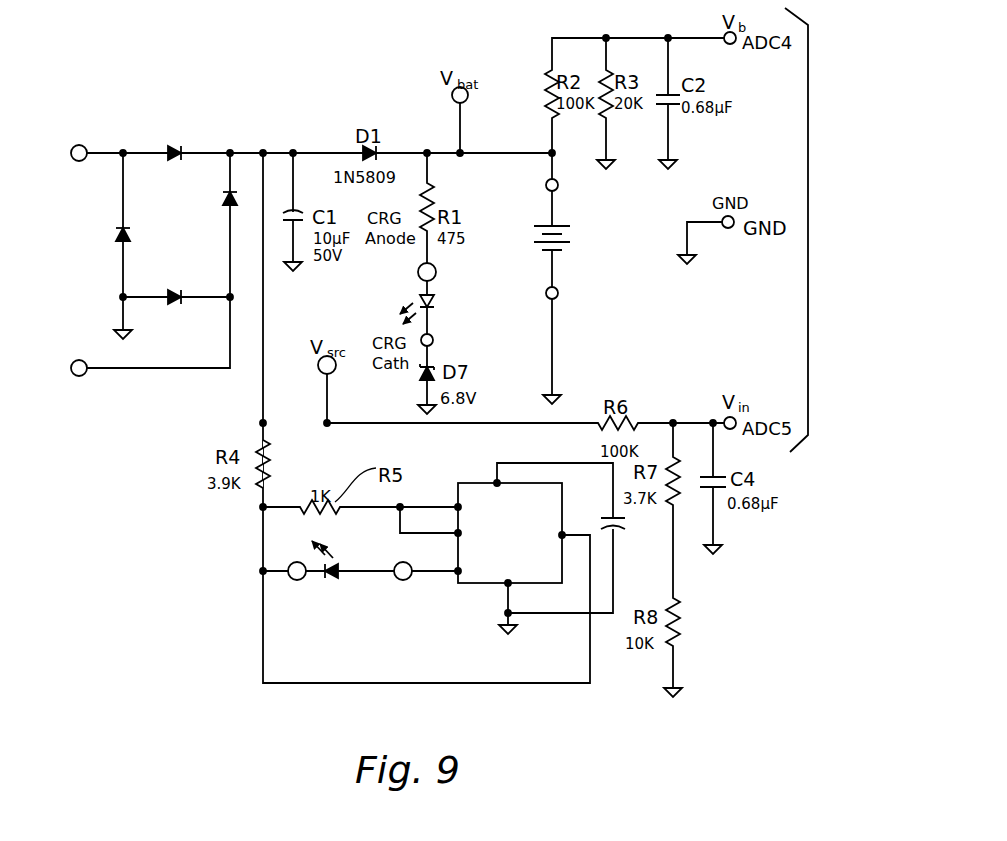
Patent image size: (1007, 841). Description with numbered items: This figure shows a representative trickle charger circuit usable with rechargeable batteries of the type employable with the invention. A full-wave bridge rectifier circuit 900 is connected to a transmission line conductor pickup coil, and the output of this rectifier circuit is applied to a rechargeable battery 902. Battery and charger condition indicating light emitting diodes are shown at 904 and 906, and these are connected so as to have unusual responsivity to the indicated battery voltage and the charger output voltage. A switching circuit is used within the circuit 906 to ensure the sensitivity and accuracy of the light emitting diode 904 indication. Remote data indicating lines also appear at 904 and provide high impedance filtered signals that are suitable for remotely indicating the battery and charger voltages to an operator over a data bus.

The full-wave bridge rectifier circuit 900 is at (276, 248).
The rechargeable battery 902 is at (644, 223).
The light emitting diode indication and remote data indicating lines 904 is at (203, 620).
The light emitting diode circuit 906 is at (420, 296).